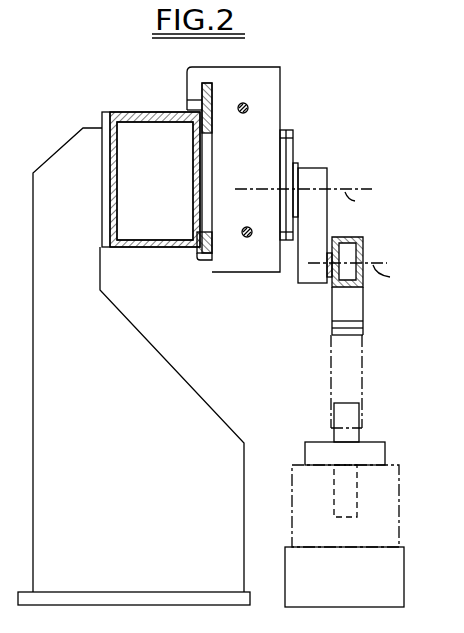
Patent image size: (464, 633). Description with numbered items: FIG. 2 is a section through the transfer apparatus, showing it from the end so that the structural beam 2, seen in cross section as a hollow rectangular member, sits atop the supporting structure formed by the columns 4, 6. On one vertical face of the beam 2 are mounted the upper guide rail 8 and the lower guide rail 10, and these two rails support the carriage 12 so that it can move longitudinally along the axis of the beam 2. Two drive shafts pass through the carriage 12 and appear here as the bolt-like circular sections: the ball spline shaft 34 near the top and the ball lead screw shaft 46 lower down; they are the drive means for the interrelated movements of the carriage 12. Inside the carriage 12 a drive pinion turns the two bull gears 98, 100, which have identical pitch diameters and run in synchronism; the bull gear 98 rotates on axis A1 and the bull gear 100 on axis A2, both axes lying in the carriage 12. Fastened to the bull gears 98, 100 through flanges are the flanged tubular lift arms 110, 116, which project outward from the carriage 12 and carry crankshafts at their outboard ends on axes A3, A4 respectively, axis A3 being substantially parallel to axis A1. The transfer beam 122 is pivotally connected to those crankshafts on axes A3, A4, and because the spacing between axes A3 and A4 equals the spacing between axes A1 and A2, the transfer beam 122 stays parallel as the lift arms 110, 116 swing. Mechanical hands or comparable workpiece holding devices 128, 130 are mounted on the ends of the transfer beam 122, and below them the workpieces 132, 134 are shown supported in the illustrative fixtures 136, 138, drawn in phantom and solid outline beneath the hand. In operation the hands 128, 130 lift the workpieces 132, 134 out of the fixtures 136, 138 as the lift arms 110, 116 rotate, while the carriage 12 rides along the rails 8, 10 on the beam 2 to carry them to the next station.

The structural beam 2 is at (160, 248).
The column 4 is at (137, 366).
The column 6 is at (197, 389).
The upper guide rail 8 is at (228, 119).
The lower guide rail 10 is at (199, 262).
The carriage 12 is at (282, 80).
The ball spline shaft 34 is at (249, 107).
The ball lead screw shaft 46 is at (246, 238).
The bull gear 98 is at (335, 185).
The bull gear 100 is at (294, 143).
The flanged tubular lift arm 110 is at (372, 218).
The lift arm 116 is at (327, 177).
The transfer beam 122 is at (362, 248).
The mechanical hand 128 is at (377, 357).
The mechanical hand 130 is at (364, 370).
The workpiece 132 is at (371, 433).
The workpiece 134 is at (379, 443).
The fixture 136 is at (366, 536).
The fixture 138 is at (392, 498).
The axis A1 is at (375, 205).
The axis A2 is at (375, 205).
The axis A3 is at (406, 280).
The axis A4 is at (406, 280).